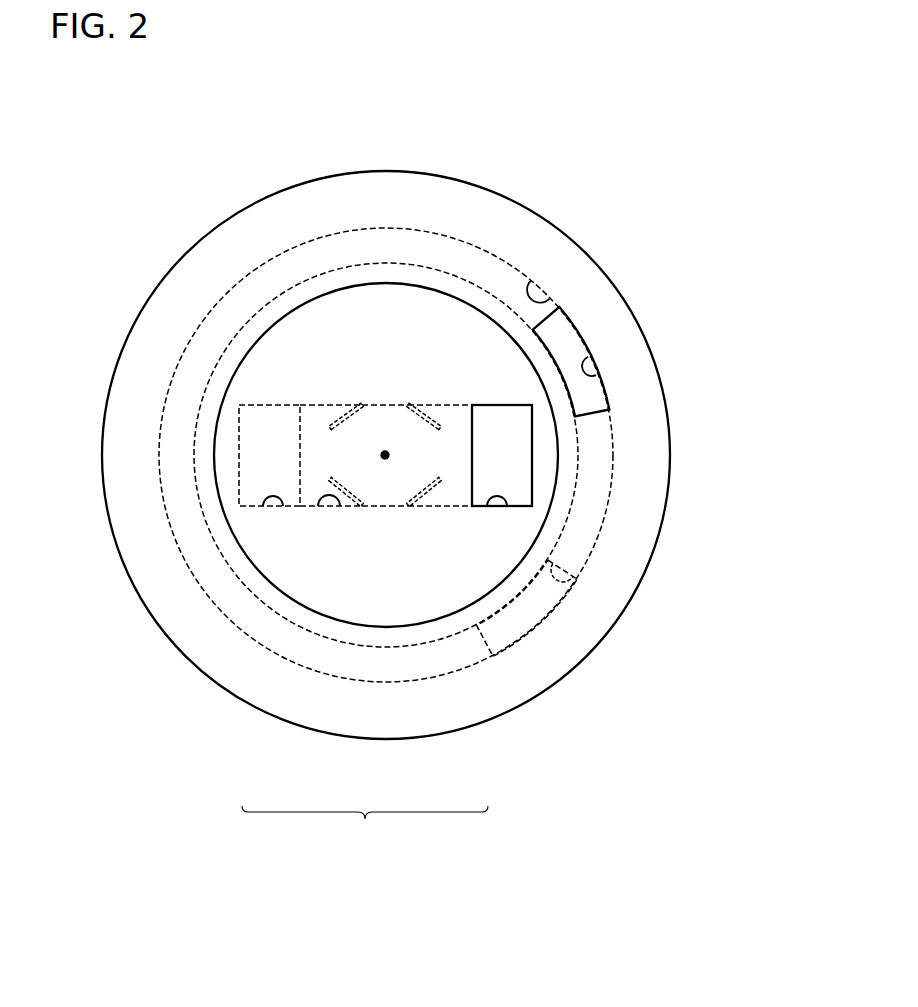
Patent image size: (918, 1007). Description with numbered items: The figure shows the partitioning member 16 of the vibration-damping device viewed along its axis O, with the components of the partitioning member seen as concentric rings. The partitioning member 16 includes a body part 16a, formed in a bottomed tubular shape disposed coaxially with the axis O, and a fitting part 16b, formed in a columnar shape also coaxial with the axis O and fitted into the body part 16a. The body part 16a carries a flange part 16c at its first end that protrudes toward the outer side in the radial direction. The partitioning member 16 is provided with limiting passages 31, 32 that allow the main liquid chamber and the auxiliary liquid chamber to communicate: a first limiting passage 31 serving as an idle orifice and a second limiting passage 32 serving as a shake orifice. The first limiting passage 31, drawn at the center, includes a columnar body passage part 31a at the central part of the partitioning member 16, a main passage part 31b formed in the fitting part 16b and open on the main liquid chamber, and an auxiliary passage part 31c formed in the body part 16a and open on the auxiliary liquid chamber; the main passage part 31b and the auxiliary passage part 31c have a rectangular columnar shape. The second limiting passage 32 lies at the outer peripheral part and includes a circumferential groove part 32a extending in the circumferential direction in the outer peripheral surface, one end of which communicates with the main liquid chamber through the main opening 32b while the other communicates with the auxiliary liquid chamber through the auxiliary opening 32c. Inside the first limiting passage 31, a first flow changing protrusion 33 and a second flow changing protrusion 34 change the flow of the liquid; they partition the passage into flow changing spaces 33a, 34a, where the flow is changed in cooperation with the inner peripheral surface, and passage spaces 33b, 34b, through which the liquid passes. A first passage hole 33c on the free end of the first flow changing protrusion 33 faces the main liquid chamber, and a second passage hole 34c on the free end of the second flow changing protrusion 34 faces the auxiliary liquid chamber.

The partitioning member 16 is at (667, 154).
The body part 16a is at (218, 332).
The fitting part 16b is at (263, 380).
The flange part 16c is at (135, 403).
The axis O is at (381, 455).
The first limiting passage 31 is at (365, 830).
The body passage part 31a is at (340, 507).
The main passage part 31b is at (484, 507).
The auxiliary passage part 31c is at (284, 507).
The second limiting passage 32 is at (800, 252).
The circumferential groove part 32a is at (553, 303).
The main opening 32b is at (598, 377).
The auxiliary opening 32c is at (567, 565).
The first flow changing protrusion 33 is at (413, 443).
The flow changing space 33a is at (440, 418).
The passage space 33b is at (423, 418).
The first passage hole 33c is at (440, 477).
The second flow changing protrusion 34 is at (357, 443).
The flow changing space 34a is at (330, 418).
The passage space 34b is at (347, 418).
The second passage hole 34c is at (330, 477).